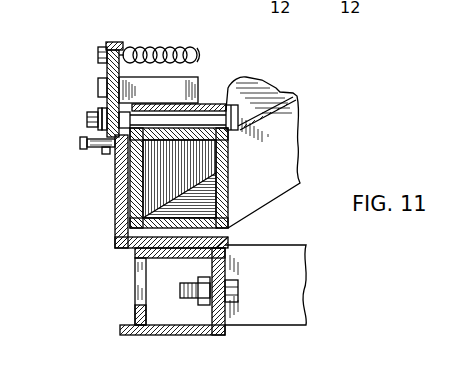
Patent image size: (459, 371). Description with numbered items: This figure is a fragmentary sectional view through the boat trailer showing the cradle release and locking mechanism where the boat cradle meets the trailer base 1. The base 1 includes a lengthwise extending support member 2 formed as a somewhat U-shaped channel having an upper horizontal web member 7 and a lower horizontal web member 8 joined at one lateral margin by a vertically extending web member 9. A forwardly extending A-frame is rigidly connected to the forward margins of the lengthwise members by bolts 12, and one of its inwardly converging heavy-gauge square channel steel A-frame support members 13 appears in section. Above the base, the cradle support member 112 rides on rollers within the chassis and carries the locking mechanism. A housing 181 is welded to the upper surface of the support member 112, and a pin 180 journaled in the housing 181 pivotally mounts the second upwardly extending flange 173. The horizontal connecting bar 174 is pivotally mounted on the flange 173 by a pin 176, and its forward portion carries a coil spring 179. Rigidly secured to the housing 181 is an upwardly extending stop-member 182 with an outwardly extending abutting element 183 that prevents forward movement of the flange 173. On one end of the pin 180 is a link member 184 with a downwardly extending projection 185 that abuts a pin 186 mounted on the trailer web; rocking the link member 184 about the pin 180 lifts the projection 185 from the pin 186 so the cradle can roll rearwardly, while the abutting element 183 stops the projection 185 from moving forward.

The base 1 is at (232, 238).
The lengthwise extending support member 2 is at (130, 325).
The upper horizontal web member 7 is at (124, 248).
The lower horizontal web member 8 is at (122, 333).
The vertically extending web member 9 is at (228, 262).
The bolt 12 is at (233, 293).
The A-frame support member 13 is at (275, 288).
The cradle support member 112 is at (267, 175).
The second upwardly extending flange 173 is at (107, 70).
The horizontal connecting bar 174 is at (120, 43).
The pin 176 is at (100, 55).
The coil spring 179 is at (197, 50).
The pin 180 is at (223, 113).
The housing 181 is at (215, 105).
The stop-member 182 is at (202, 102).
The abutting element 183 is at (98, 88).
The link member 184 is at (92, 104).
The downwardly extending projection 185 is at (103, 153).
The pin 186 is at (80, 145).